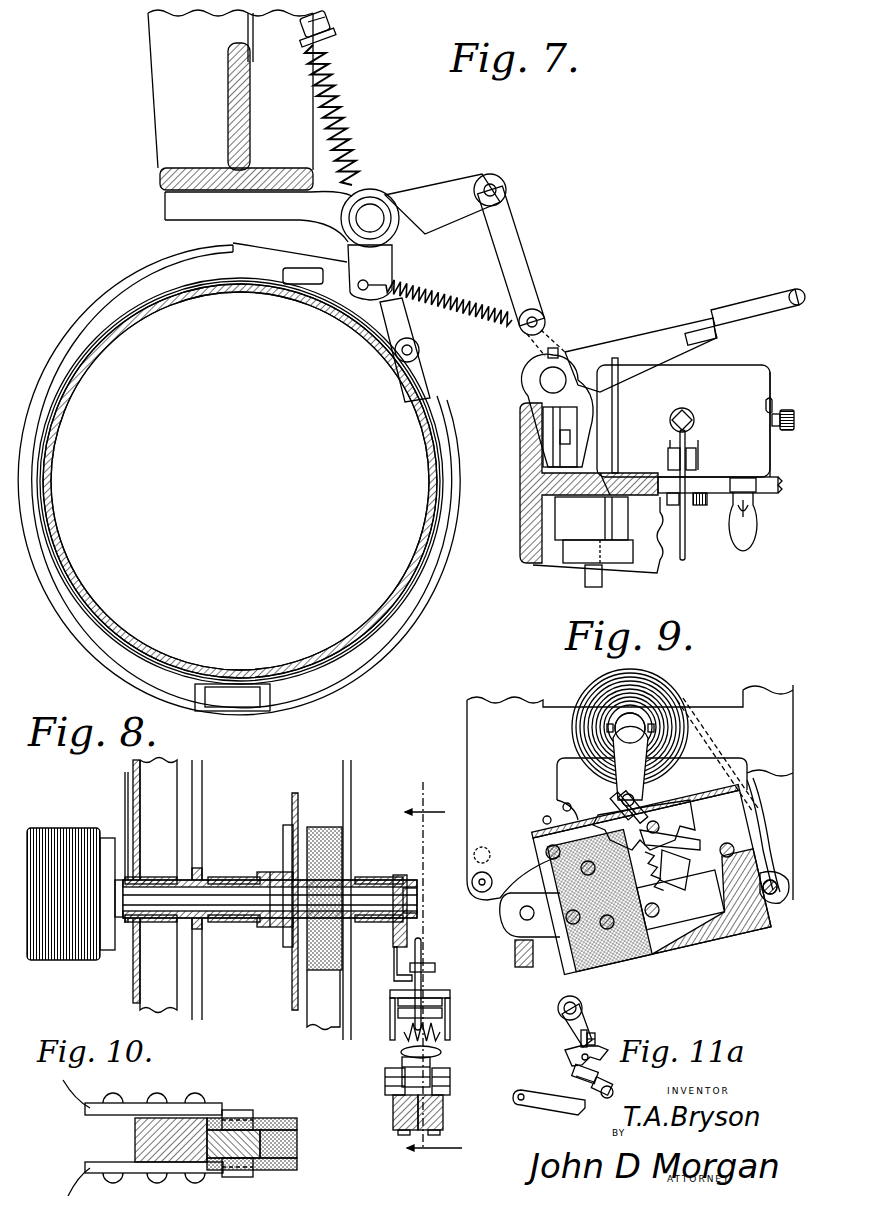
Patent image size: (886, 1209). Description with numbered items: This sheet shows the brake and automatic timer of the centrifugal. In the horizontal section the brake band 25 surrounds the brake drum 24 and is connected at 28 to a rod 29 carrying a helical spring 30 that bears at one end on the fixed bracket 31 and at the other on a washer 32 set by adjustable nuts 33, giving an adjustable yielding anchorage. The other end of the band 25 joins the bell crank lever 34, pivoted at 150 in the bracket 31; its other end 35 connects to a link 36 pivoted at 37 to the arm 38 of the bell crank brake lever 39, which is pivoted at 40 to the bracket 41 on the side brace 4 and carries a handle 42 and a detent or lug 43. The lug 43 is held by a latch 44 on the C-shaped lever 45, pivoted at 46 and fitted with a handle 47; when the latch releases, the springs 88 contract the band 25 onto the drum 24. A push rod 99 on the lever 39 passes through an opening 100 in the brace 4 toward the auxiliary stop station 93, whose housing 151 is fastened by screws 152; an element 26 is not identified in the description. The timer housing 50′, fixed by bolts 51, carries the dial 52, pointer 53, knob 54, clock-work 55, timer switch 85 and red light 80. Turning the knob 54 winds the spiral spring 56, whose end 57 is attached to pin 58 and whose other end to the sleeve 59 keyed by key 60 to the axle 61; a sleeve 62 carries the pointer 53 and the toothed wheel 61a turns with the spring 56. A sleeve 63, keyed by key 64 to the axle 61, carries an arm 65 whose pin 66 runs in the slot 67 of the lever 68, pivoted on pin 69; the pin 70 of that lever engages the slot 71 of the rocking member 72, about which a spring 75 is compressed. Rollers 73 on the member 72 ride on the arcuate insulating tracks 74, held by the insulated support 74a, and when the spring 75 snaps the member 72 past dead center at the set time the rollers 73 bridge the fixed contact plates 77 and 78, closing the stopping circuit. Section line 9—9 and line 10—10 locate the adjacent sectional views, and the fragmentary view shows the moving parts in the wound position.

In FIG. 7, the side brace 4 is at (157, 78).
In FIG. 8, the section line 9— 9 is at (433, 972).
In FIG. 9, the section line 10— 10 is at (528, 878).
In FIG. 7, the brake drum 24 is at (64, 384).
In FIG. 7, the brake band 25 is at (112, 616).
In FIG. 7, the linkage 26 is at (551, 265).
In FIG. 7, the brake band connection 28 is at (420, 350).
In FIG. 7, the rod 29 is at (385, 290).
In FIG. 7, the helical spring 30 is at (346, 108).
In FIG. 7, the fixed bracket 31 is at (282, 218).
In FIG. 7, the washer 32 is at (325, 36).
In FIG. 7, the adjustable nuts 33 is at (326, 21).
In FIG. 7, the bell crank lever 34 is at (346, 255).
In FIG. 7, the other end of bell crank lever 35 is at (478, 182).
In FIG. 7, the link 36 is at (517, 232).
In FIG. 7, the pivot 37 is at (541, 316).
In FIG. 7, the arm 38 is at (558, 347).
In FIG. 7, the bell crank brake lever 39 is at (622, 342).
In FIG. 7, the pivot 40 is at (540, 380).
In FIG. 7, the bracket 41 is at (565, 432).
In FIG. 7, the handle 42 is at (776, 300).
In FIG. 7, the detent or lug 43 is at (694, 330).
In FIG. 7, the latch 44 is at (690, 418).
In FIG. 7, the lever 45 is at (674, 458).
In FIG. 7, the pivot 46 is at (702, 466).
In FIG. 7, the handle 47 is at (686, 558).
In FIG. 7, the housing 50′ is at (683, 421).
In FIG. 8, the housing 50′ is at (165, 772).
In FIG. 7, the bolts 51 is at (680, 506).
In FIG. 7, the dial 52 is at (771, 376).
In FIG. 8, the dial 52 is at (134, 997).
In FIG. 7, the pointer 53 is at (774, 440).
In FIG. 8, the pointer 53 is at (124, 798).
In FIG. 7, the operating knob 54 is at (789, 432).
In FIG. 8, the operating knob 54 is at (60, 948).
In FIG. 8, the clock-work or time measuring device 55 is at (270, 873).
In FIG. 9, the clock-work or time measuring device 55 is at (630, 792).
In FIG. 8, the spiral spring 56 is at (326, 826).
In FIG. 9, the spiral spring 56 is at (678, 692).
In FIG. 9, the end of spiral spring 57 is at (770, 848).
In FIG. 9, the pin 58 is at (776, 904).
In FIG. 8, the sleeve 59 is at (243, 922).
In FIG. 8, the key 60 is at (270, 876).
In FIG. 8, the axle 61 is at (215, 894).
In FIG. 9, the axle 61 is at (630, 728).
In FIG. 11A, the axle 61 is at (566, 1005).
In FIG. 8, the toothed wheel 61a is at (294, 793).
In FIG. 8, the sleeve 62 is at (166, 922).
In FIG. 8, the sleeve 63 is at (404, 878).
In FIG. 9, the sleeve 63 is at (612, 710).
In FIG. 11A, the sleeve 63 is at (582, 1008).
In FIG. 8, the key 64 is at (372, 878).
In FIG. 9, the key 64 is at (656, 736).
In FIG. 8, the arm 65 is at (395, 958).
In FIG. 9, the arm 65 is at (630, 756).
In FIG. 11A, the arm 65 is at (586, 1024).
In FIG. 8, the pin 66 is at (436, 967).
In FIG. 9, the pin 66 is at (618, 803).
In FIG. 11A, the pin 66 is at (596, 1039).
In FIG. 8, the slot 67 is at (422, 958).
In FIG. 9, the slot 67 is at (650, 800).
In FIG. 11A, the slot 67 is at (580, 1041).
In FIG. 8, the lever 68 is at (390, 998).
In FIG. 9, the lever 68 is at (692, 812).
In FIG. 11A, the lever 68 is at (566, 1053).
In FIG. 8, the pin 69 is at (450, 1000).
In FIG. 9, the pin 69 is at (644, 828).
In FIG. 11A, the pin 69 is at (590, 1057).
In FIG. 8, the pin 70 is at (452, 1015).
In FIG. 9, the pin 70 is at (702, 848).
In FIG. 11A, the pin 70 is at (574, 1080).
In FIG. 9, the slot 71 is at (690, 876).
In FIG. 11A, the slot 71 is at (598, 1072).
In FIG. 8, the rocking member 72 is at (390, 1050).
In FIG. 9, the rocking member 72 is at (700, 958).
In FIG. 10, the rocking member 72 is at (252, 1132).
In FIG. 11A, the rocking member 72 is at (610, 1084).
In FIG. 8, the rollers 73 is at (385, 1081).
In FIG. 9, the rollers 73 is at (677, 952).
In FIG. 10, the rollers 73 is at (244, 1110).
In FIG. 11A, the rollers 73 is at (607, 1098).
In FIG. 8, the arcuate insulating tracks 74 is at (400, 1128).
In FIG. 9, the arcuate insulating tracks 74 is at (714, 942).
In FIG. 10, the arcuate insulating tracks 74 is at (290, 1122).
In FIG. 8, the insulated support 74a is at (442, 1126).
In FIG. 9, the insulated support 74a is at (642, 968).
In FIG. 10, the insulated support 74a is at (298, 1144).
In FIG. 8, the spring 75 is at (450, 1046).
In FIG. 9, the spring 75 is at (650, 866).
In FIG. 8, the contact plate 77 is at (444, 1105).
In FIG. 10, the contact plate 77 is at (200, 1174).
In FIG. 11A, the contact plate 77 is at (556, 1108).
In FIG. 8, the contact plate 78 is at (393, 1105).
In FIG. 9, the contact plate 78 is at (512, 926).
In FIG. 10, the contact plate 78 is at (184, 1103).
In FIG. 7, the red light 80 is at (757, 538).
In FIG. 7, the timer switch 85 is at (767, 402).
In FIG. 7, the springs 88 is at (456, 294).
In FIG. 7, the auxiliary stop station 93 is at (591, 518).
In FIG. 7, the push rod 99 is at (619, 403).
In FIG. 7, the opening 100 is at (620, 488).
In FIG. 7, the pivot 150 is at (374, 212).
In FIG. 7, the housing 151 is at (598, 552).
In FIG. 7, the screws 152 is at (586, 580).